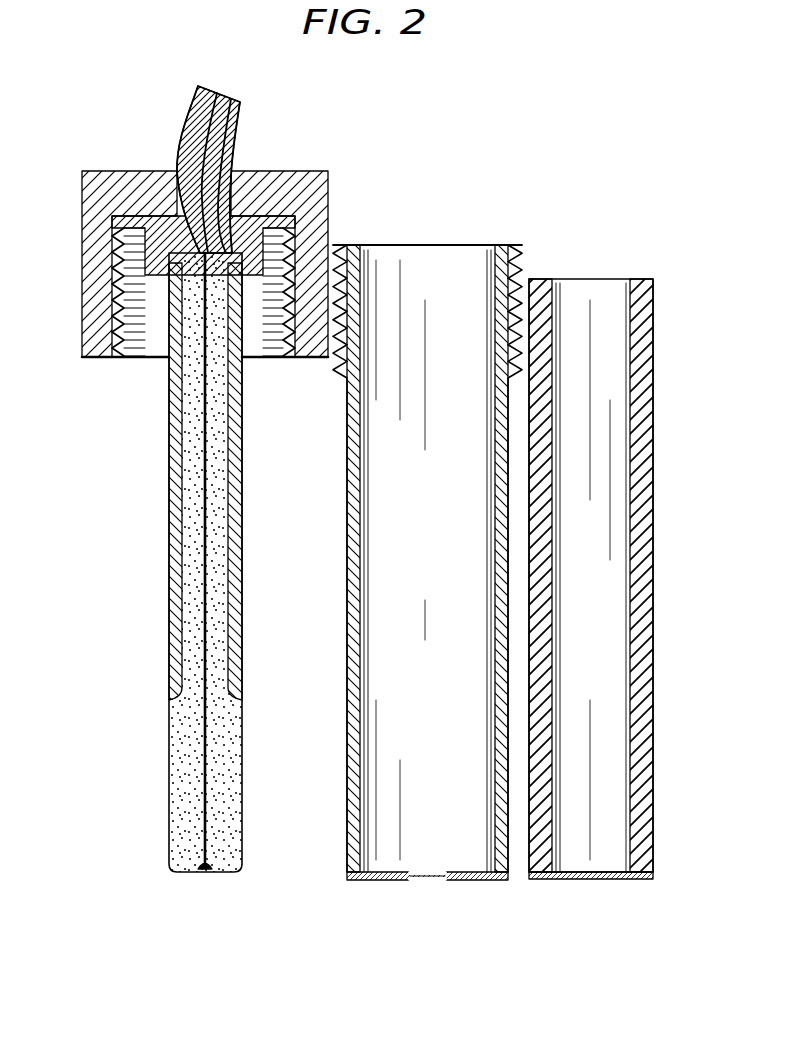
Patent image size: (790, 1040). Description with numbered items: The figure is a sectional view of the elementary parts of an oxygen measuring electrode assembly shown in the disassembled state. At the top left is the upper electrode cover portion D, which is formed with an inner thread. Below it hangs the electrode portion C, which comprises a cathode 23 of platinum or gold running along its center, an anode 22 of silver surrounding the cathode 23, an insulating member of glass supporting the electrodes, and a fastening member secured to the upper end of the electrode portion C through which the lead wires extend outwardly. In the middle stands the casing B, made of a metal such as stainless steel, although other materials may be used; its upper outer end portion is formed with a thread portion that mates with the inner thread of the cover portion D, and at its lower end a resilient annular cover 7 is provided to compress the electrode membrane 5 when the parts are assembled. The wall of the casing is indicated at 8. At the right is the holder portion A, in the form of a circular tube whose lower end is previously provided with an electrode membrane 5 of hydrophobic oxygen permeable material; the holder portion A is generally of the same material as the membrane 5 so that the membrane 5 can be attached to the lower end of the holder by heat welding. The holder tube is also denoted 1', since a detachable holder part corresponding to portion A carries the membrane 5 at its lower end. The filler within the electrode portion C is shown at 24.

The upper electrode cover portion D is at (286, 167).
The electrode portion C is at (178, 562).
The anode 22 is at (178, 495).
The insulating filler material 24 is at (223, 525).
The cathode 23 is at (207, 779).
The casing B is at (402, 541).
The sleeve wall 8 is at (346, 590).
The resilient annular cover 7 is at (398, 881).
The holder portion A is at (602, 541).
The detachable part of the holder 1' is at (602, 535).
The electrode membrane 5 is at (597, 880).